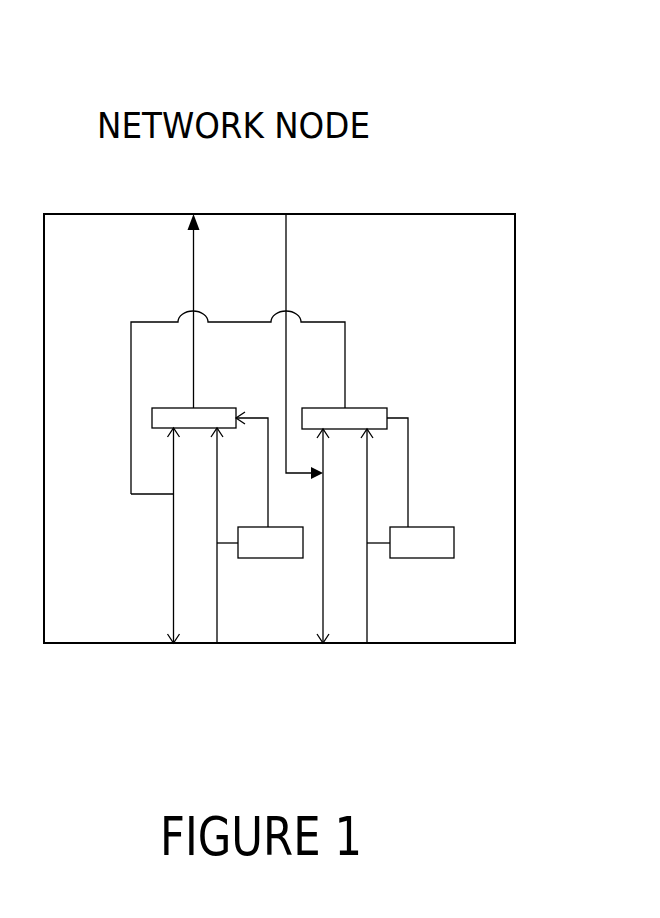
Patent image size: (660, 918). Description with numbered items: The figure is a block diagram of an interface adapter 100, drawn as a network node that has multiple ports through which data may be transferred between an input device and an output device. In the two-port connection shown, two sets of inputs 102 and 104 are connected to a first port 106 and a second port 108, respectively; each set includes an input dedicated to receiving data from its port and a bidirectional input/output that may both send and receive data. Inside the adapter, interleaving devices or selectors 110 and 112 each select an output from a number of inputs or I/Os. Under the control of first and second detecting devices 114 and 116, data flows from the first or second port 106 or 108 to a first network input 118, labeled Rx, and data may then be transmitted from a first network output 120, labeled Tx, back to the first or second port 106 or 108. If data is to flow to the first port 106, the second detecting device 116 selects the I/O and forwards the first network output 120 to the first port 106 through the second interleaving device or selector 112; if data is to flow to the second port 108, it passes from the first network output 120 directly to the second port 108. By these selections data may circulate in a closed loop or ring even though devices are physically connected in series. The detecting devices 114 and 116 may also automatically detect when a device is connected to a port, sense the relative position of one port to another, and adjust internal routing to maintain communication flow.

The interface adapter 100 is at (556, 77).
The first set of inputs 102 is at (195, 608).
The second set of inputs 104 is at (345, 594).
The first port 106 is at (140, 683).
The second port 108 is at (402, 684).
The first interleaving device or selector 110 is at (212, 408).
The second interleaving device or selector 112 is at (367, 408).
The first detecting device 114 is at (281, 558).
The second detecting device 116 is at (436, 527).
The first network input 118 is at (205, 185).
The first network output 120 is at (295, 185).